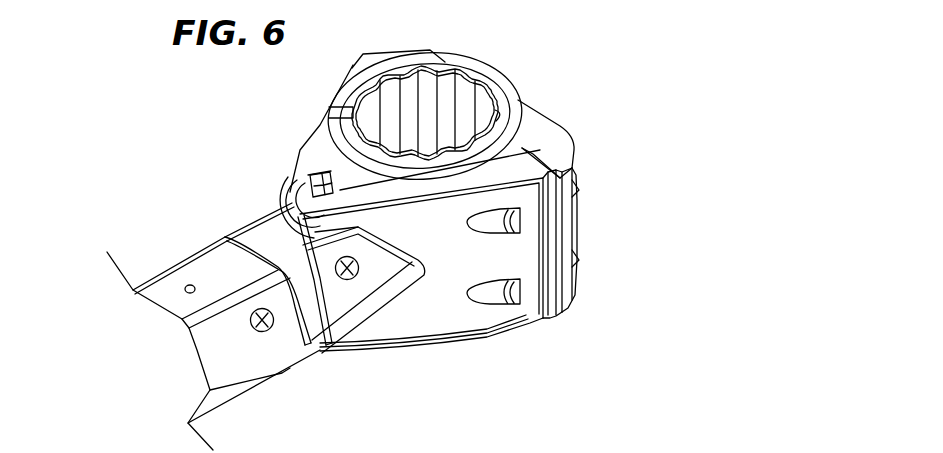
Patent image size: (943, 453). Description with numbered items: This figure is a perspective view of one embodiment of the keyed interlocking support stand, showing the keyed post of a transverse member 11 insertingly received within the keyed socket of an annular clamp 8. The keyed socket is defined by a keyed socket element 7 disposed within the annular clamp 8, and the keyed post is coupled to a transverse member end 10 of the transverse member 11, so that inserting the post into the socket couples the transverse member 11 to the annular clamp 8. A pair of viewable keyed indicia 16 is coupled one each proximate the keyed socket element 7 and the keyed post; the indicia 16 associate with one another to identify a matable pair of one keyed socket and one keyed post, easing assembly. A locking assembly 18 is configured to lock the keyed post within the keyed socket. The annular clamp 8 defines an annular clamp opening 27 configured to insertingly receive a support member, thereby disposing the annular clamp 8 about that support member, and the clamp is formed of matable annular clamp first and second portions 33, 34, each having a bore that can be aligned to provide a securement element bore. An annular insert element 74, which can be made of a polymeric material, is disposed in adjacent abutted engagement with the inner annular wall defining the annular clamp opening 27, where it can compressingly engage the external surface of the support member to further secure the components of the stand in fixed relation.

The keyed socket element 7 is at (348, 330).
The annular clamp 8 is at (493, 340).
The transverse member end 10 is at (310, 322).
The transverse member 11 is at (203, 270).
The pair of viewable keyed indicia 16 is at (335, 267).
The locking assembly 18 is at (319, 173).
The annular clamp opening 27 is at (440, 136).
The annular clamp first portion 33 is at (543, 140).
The annular clamp second portion 34 is at (420, 313).
The annular insert element 74 is at (452, 68).